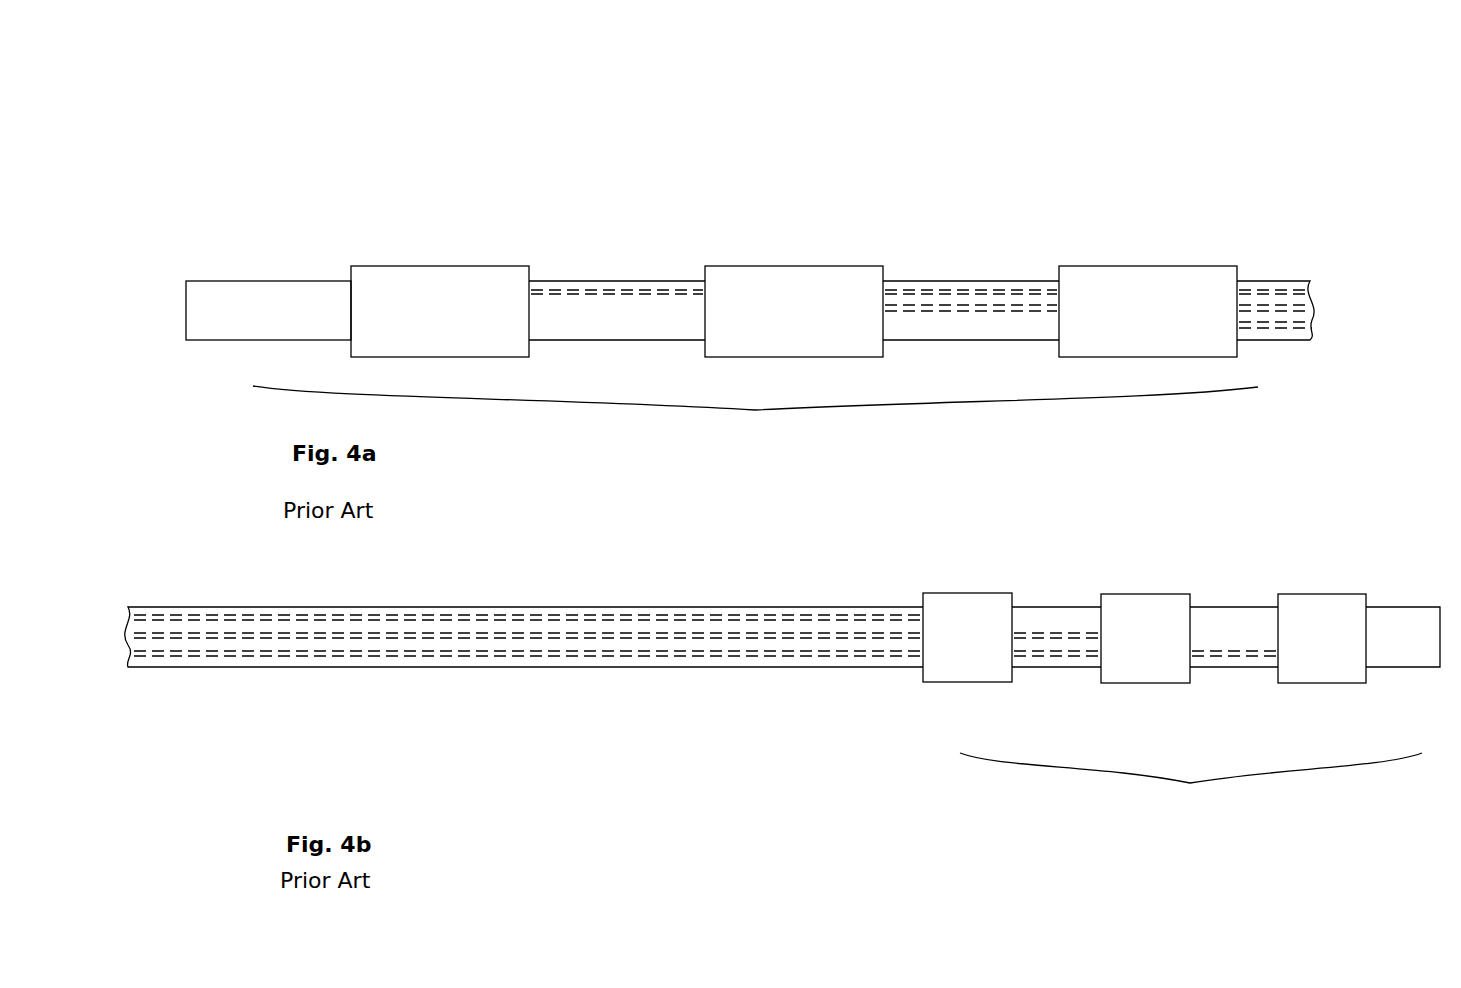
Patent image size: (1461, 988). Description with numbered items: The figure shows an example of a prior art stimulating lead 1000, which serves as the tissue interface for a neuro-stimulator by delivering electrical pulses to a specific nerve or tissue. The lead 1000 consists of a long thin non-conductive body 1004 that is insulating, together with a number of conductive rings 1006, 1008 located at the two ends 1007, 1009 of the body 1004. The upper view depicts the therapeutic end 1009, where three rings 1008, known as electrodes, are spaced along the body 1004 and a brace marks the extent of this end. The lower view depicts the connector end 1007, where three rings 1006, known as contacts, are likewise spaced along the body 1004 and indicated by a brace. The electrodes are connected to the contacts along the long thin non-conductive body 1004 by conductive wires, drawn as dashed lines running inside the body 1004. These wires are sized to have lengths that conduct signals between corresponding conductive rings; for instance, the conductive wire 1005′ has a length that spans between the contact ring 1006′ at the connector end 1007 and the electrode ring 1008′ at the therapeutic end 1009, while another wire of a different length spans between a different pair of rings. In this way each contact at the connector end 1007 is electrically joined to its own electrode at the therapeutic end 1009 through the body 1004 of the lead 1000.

In FIG. 4A, the stimulating lead 1000 is at (596, 186).
In FIG. 4A, the long thin non-conductive body 1004 is at (1272, 281).
In FIG. 4B, the long thin non-conductive body 1004 is at (486, 607).
In FIG. 4A, the conductive wire 1005′ is at (608, 292).
In FIG. 4B, the conductive wire 1005′ is at (703, 613).
In FIG. 4B, the conductive rings 1006 is at (1328, 608).
In FIG. 4B, the conductive ring 1006′ is at (950, 615).
In FIG. 4B, the connector end 1007 is at (1197, 798).
In FIG. 4A, the conductive rings 1008 is at (1113, 283).
In FIG. 4A, the conductive ring 1008′ is at (413, 284).
In FIG. 4A, the therapeutic end 1009 is at (757, 413).